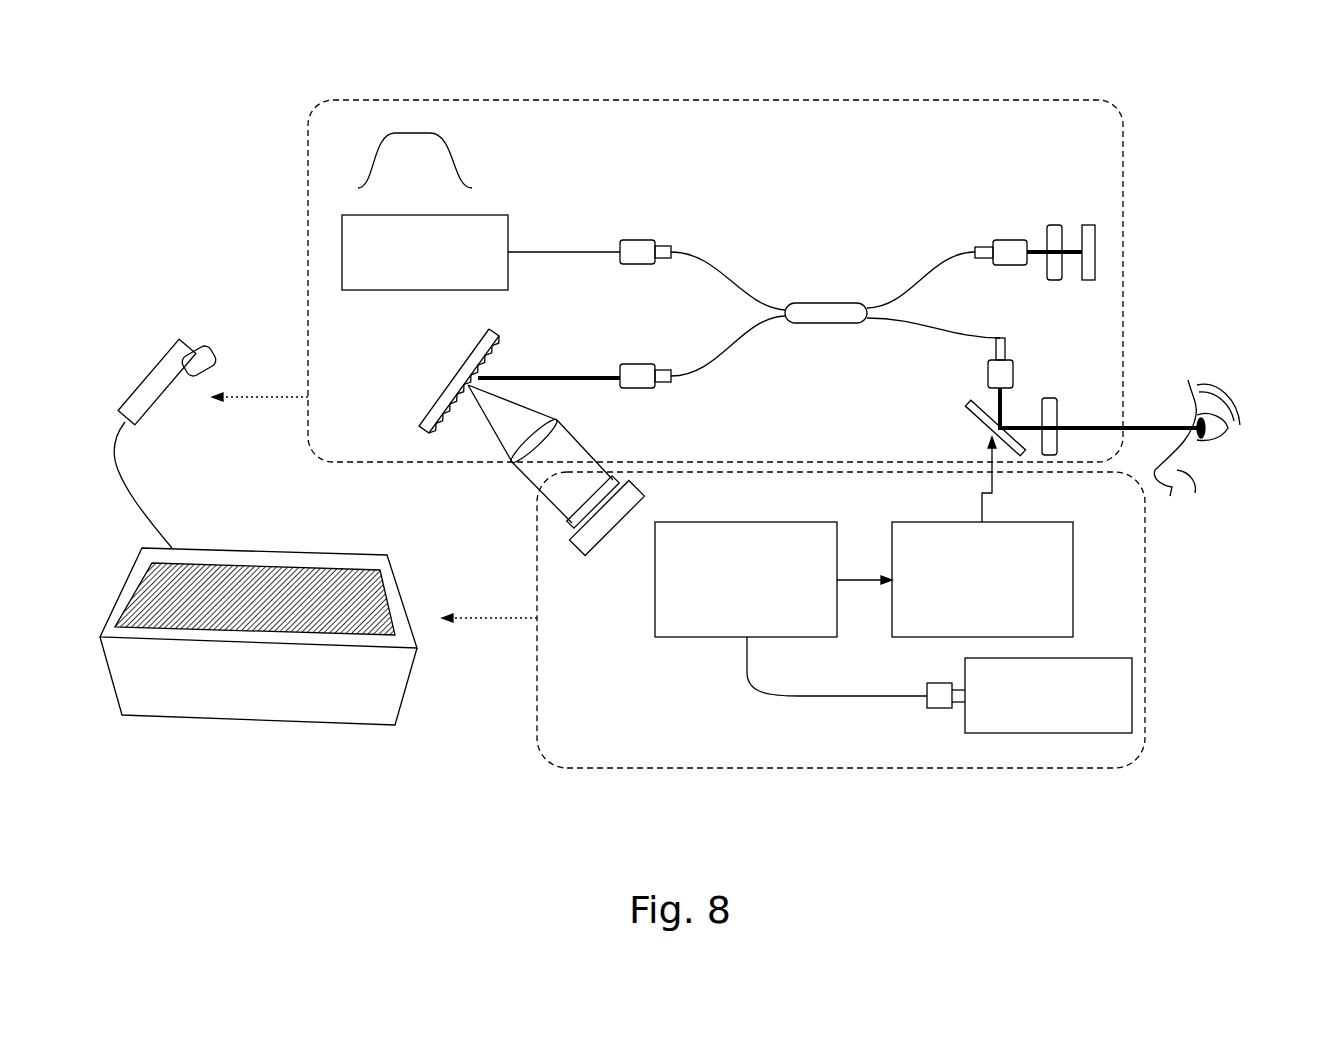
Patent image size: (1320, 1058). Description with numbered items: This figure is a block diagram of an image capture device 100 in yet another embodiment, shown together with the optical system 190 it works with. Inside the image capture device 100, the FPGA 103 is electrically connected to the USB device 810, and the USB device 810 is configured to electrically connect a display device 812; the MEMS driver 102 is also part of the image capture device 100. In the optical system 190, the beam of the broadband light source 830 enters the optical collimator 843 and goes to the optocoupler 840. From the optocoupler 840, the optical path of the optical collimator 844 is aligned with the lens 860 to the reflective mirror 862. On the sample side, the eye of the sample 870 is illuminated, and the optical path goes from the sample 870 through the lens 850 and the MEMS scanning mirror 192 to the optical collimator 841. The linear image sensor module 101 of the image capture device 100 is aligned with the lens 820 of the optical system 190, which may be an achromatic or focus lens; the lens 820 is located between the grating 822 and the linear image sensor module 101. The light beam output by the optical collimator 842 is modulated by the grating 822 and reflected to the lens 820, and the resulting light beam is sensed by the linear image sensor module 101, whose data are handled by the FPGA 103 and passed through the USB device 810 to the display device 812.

The optical system 190 is at (678, 100).
The image capture device 100 is at (655, 767).
The display device 812 is at (996, 733).
The broadband light source 830 is at (342, 255).
The optical collimator 843 is at (637, 240).
The optical collimator 842 is at (637, 364).
The optocoupler 840 is at (826, 303).
The optical collimator 844 is at (1005, 240).
The lens 860 is at (1055, 225).
The reflective mirror 862 is at (1088, 225).
The optical collimator 841 is at (988, 370).
The lens 850 is at (1048, 398).
The MEMS scanning mirror 192 is at (975, 412).
The grating 822 is at (468, 383).
The lens 820 is at (515, 468).
The linear image sensor module 101 is at (573, 548).
The FPGA 103 is at (655, 613).
The MEMS driver 102 is at (892, 613).
The USB device 810 is at (927, 695).
The sample 870 is at (1226, 519).